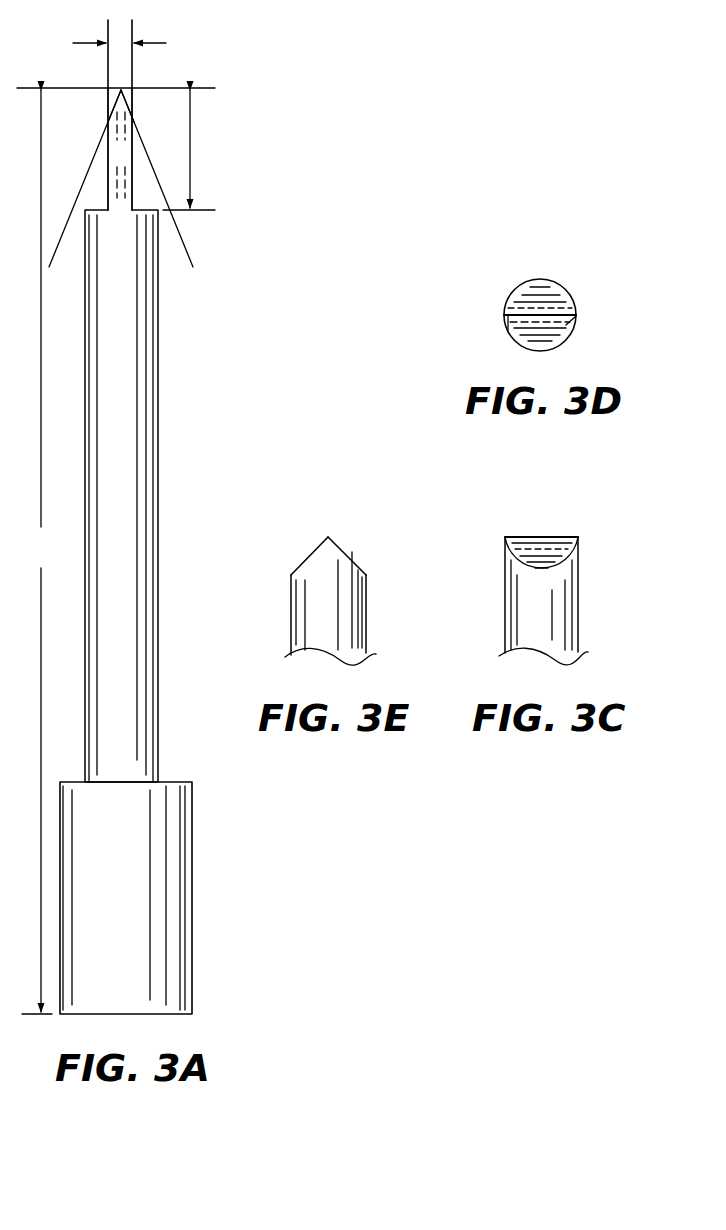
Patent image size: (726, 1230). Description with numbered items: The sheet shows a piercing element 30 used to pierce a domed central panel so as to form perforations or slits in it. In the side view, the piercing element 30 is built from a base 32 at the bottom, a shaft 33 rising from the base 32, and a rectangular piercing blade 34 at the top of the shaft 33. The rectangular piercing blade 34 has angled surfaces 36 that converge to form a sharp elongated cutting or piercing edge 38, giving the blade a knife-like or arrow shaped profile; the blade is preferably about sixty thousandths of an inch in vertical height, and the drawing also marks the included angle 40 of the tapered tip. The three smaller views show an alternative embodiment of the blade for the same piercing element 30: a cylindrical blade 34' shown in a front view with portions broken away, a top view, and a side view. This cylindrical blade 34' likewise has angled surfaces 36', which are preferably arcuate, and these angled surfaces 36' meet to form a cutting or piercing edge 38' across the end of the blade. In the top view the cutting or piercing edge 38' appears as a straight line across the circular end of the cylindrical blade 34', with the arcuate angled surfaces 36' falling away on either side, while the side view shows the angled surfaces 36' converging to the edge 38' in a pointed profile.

In FIG. 3A, the piercing element 30 is at (146, 517).
In FIG. 3D, the piercing element 30 is at (520, 298).
In FIG. 3E, the piercing element 30 is at (310, 569).
In FIG. 3C, the piercing element 30 is at (520, 566).
In FIG. 3A, the base 32 is at (192, 878).
In FIG. 3A, the shaft 33 is at (163, 592).
In FIG. 3A, the rectangular piercing blade 34 is at (94, 149).
In FIG. 3A, the angled surfaces 36 is at (158, 93).
In FIG. 3A, the cutting or piercing edge 38 is at (91, 91).
In FIG. 3A, the taper angle 40 is at (184, 248).
In FIG. 3E, the cylindrical blade 34' is at (312, 608).
In FIG. 3C, the cylindrical blade 34' is at (524, 601).
In FIG. 3D, the angled surfaces 36' is at (598, 342).
In FIG. 3E, the angled surfaces 36' is at (368, 539).
In FIG. 3C, the angled surfaces 36' is at (575, 549).
In FIG. 3D, the cutting or piercing edge 38' is at (512, 333).
In FIG. 3E, the cutting or piercing edge 38' is at (302, 524).
In FIG. 3C, the cutting or piercing edge 38' is at (554, 512).